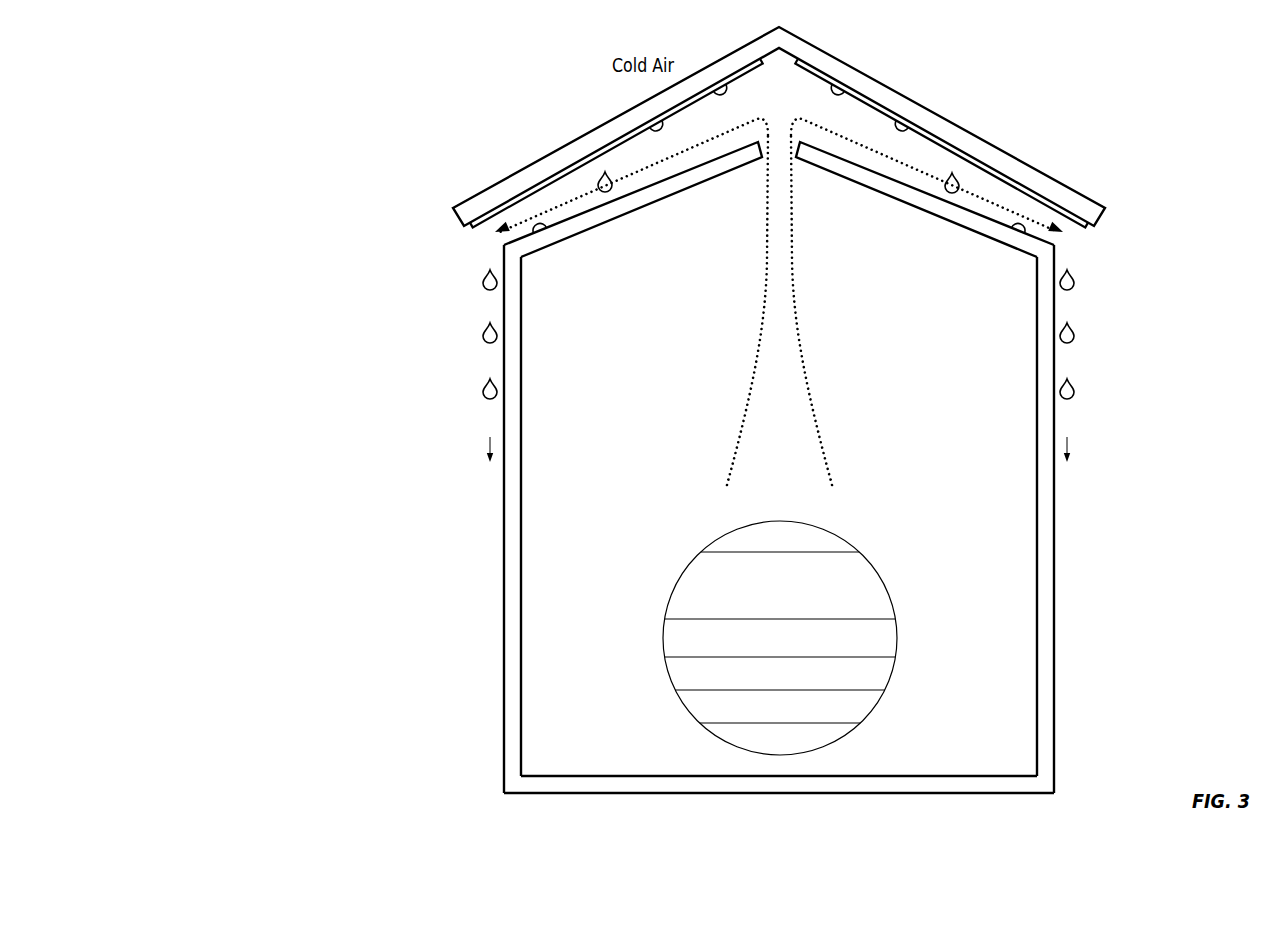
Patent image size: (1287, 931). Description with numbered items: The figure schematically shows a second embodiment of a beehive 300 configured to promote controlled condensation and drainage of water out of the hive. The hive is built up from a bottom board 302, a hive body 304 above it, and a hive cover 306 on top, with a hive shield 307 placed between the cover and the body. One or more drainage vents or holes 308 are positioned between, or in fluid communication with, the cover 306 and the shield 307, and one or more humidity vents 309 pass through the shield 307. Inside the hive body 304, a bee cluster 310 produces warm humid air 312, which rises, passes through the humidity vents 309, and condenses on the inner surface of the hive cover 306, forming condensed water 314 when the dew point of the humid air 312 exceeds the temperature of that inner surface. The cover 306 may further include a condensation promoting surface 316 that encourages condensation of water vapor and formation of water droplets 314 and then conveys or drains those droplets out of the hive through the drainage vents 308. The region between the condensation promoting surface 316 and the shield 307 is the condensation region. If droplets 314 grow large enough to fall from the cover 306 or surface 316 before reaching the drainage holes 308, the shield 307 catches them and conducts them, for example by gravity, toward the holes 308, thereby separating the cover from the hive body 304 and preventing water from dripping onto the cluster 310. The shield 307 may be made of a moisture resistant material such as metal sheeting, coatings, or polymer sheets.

The beehive 300 is at (827, 24).
The bottom board 302 is at (497, 782).
The hive body 304 is at (500, 529).
The hive cover 306 is at (450, 197).
The hive shield 307 is at (576, 209).
The drainage vents 308 is at (480, 240).
The humidity vents 309 is at (777, 157).
The bee cluster 310 is at (872, 647).
The warm humid air 312 is at (833, 310).
The condensed water 314 is at (720, 112).
The condensation promoting surface 316 is at (622, 134).